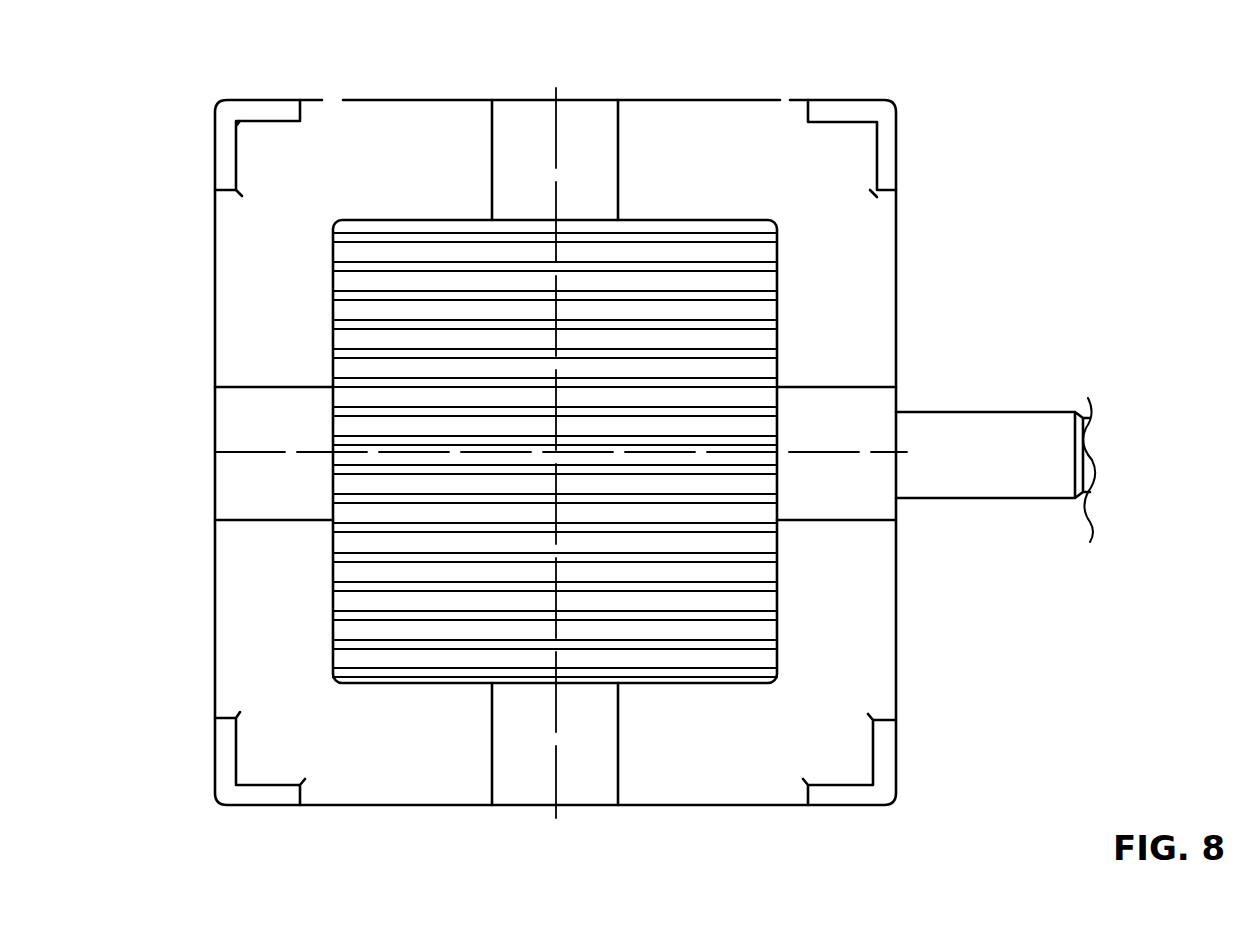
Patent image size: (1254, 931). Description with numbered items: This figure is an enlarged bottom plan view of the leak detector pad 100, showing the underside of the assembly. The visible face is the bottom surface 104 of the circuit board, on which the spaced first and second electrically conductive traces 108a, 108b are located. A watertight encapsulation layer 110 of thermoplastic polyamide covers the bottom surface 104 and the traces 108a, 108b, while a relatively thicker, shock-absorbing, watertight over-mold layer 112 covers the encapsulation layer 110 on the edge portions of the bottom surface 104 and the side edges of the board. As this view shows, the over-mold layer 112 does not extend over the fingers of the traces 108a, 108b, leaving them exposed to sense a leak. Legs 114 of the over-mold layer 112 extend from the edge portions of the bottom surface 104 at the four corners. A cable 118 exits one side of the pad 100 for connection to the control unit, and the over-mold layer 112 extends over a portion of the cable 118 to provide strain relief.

The leak detector pad 100 is at (1158, 224).
The bottom surface 104 is at (342, 570).
The first electrically conductive trace 108a is at (335, 540).
The second electrically conductive trace 108b is at (336, 588).
The encapsulation layer 110 is at (765, 268).
The over-mold layer 112 is at (880, 217).
The legs 114 is at (253, 106).
The cable 118 is at (990, 422).